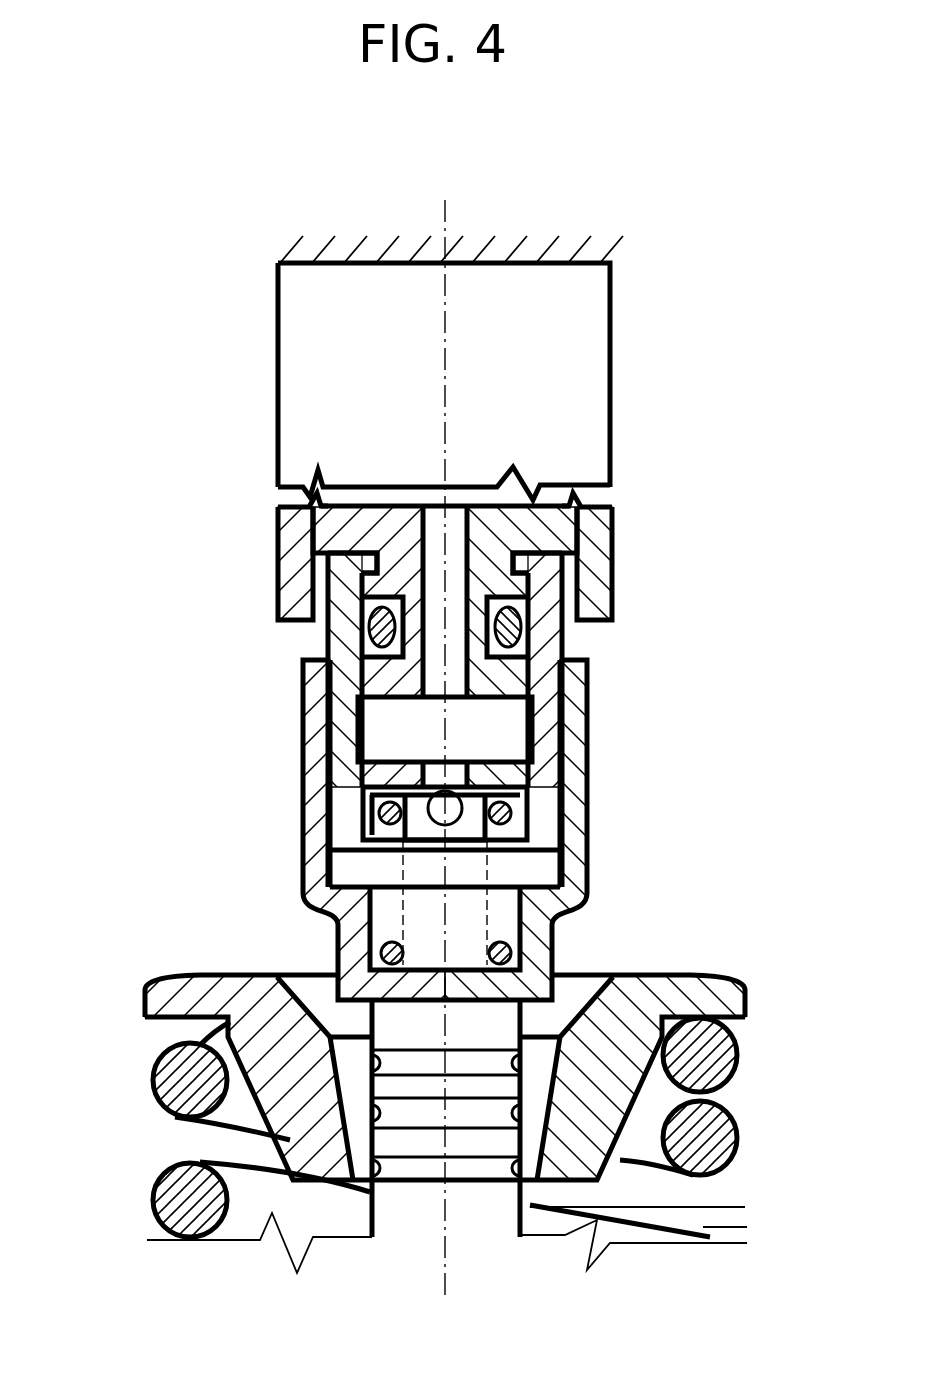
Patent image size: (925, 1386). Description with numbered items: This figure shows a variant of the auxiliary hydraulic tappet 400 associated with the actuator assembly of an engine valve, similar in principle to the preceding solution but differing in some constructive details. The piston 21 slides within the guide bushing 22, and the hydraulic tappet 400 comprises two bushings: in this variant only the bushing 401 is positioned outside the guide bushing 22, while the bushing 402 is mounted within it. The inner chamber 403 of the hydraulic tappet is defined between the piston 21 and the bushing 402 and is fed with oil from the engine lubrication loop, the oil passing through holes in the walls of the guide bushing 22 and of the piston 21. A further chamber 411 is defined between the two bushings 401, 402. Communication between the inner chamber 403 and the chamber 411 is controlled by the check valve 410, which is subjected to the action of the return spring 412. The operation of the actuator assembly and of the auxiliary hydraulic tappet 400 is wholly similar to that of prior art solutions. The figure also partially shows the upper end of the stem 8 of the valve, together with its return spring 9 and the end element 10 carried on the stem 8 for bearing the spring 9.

The stem 8 is at (502, 1212).
The return spring 9 is at (143, 1177).
The end element 10 is at (141, 975).
The piston 21 is at (497, 520).
The guide bushing 22 is at (612, 532).
The auxiliary hydraulic tappet 400 is at (756, 618).
The bushing 401 is at (303, 727).
The bushing 402 is at (327, 635).
The inner chamber 403 is at (503, 722).
The check valve 410 is at (360, 835).
The chamber 411 is at (467, 918).
The return spring 412 is at (500, 870).